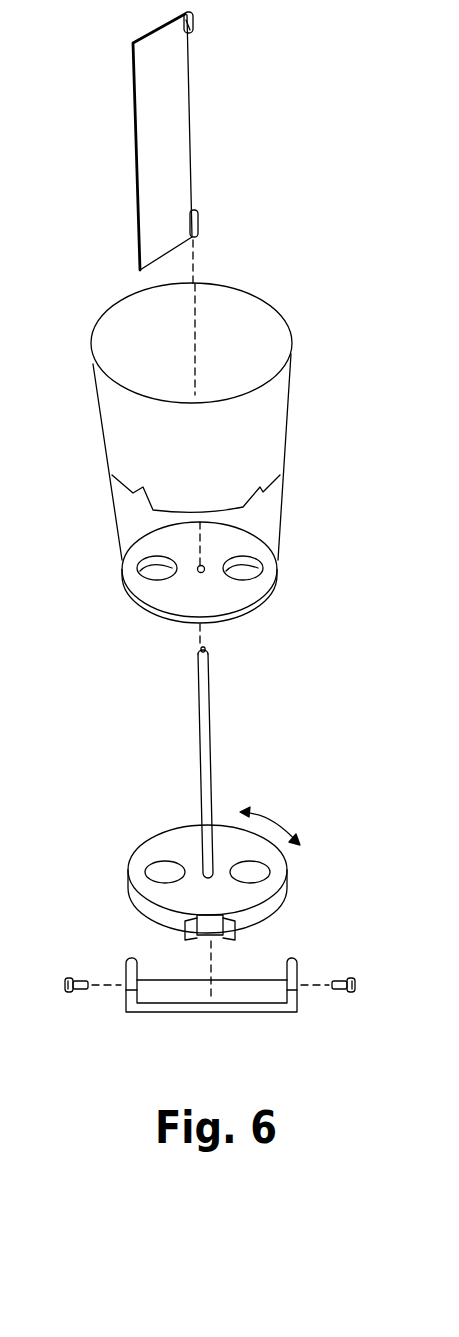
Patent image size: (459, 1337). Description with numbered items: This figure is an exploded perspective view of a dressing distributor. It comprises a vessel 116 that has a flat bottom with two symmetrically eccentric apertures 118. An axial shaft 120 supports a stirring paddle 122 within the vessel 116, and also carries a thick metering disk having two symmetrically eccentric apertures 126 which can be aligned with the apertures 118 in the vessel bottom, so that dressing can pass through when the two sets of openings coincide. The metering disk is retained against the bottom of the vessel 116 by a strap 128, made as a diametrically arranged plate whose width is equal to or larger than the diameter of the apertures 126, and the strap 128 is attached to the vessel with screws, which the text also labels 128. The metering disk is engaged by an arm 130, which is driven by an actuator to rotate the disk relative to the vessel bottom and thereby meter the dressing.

The vessel 116 is at (273, 432).
The apertures 118 is at (243, 569).
The axial shaft 120 is at (207, 764).
The stirring paddle 122 is at (148, 173).
The apertures 126 is at (238, 870).
The strap 128 is at (217, 1012).
The arm 130 is at (335, 977).